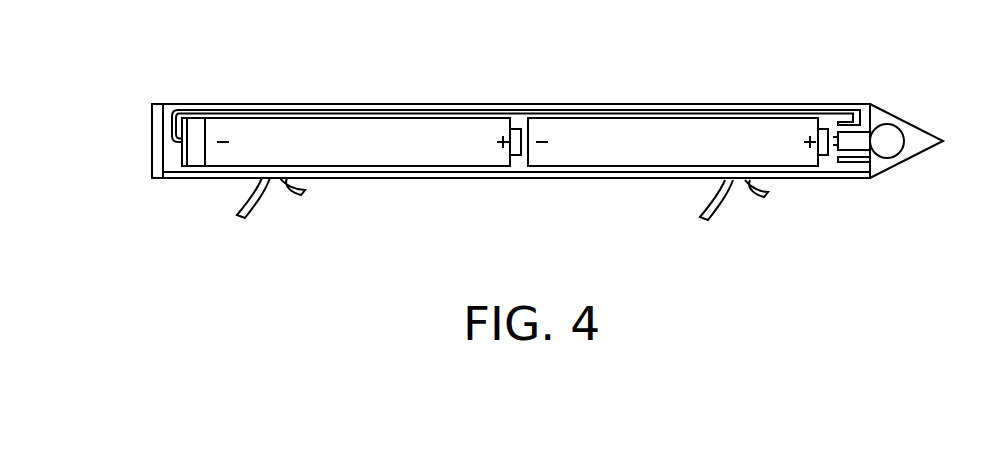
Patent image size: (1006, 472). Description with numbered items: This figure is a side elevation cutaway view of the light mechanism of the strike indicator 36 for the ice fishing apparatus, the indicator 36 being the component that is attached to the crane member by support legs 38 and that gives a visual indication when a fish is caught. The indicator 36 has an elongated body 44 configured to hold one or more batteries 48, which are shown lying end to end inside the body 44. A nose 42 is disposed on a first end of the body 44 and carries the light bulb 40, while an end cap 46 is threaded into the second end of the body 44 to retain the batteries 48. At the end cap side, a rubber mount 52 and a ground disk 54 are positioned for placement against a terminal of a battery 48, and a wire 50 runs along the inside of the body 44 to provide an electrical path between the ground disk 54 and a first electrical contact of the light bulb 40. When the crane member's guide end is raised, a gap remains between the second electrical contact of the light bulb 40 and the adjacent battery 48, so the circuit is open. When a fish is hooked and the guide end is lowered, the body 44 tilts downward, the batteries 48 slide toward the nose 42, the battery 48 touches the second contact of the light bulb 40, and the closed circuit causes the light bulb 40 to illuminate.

The strike indicator 36 is at (773, 84).
The support legs 38 is at (258, 208).
The light bulb 40 is at (888, 137).
The nose 42 is at (913, 143).
The body 44 is at (518, 179).
The end cap 46 is at (152, 127).
The batteries 48 is at (473, 130).
The wire 50 is at (175, 109).
The rubber mount 52 is at (197, 146).
The ground disk 54 is at (183, 147).